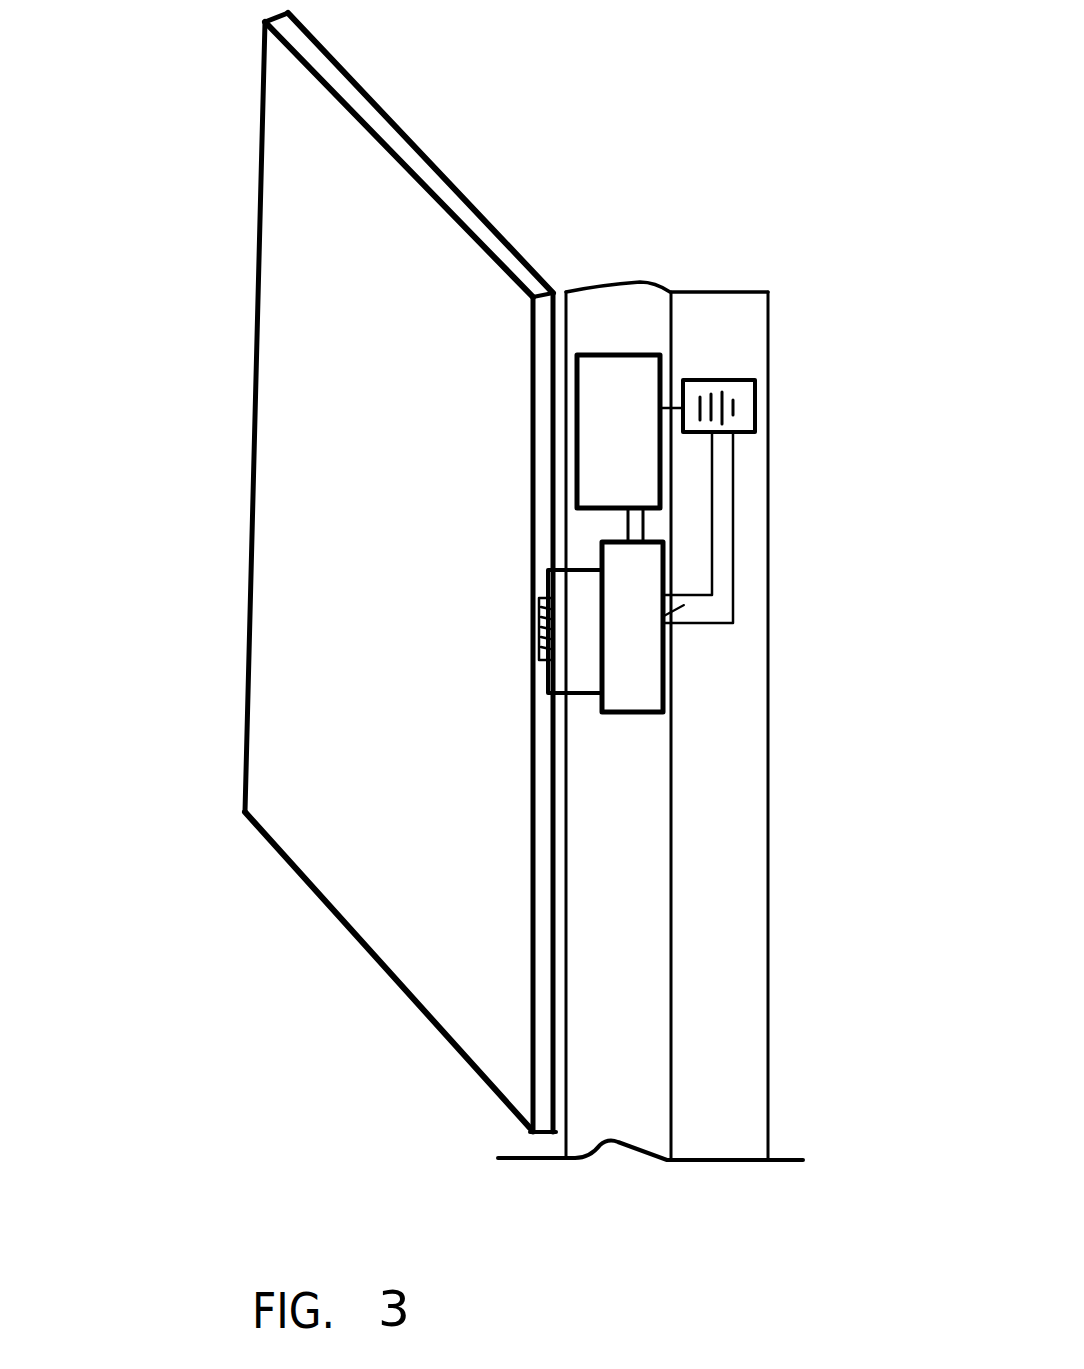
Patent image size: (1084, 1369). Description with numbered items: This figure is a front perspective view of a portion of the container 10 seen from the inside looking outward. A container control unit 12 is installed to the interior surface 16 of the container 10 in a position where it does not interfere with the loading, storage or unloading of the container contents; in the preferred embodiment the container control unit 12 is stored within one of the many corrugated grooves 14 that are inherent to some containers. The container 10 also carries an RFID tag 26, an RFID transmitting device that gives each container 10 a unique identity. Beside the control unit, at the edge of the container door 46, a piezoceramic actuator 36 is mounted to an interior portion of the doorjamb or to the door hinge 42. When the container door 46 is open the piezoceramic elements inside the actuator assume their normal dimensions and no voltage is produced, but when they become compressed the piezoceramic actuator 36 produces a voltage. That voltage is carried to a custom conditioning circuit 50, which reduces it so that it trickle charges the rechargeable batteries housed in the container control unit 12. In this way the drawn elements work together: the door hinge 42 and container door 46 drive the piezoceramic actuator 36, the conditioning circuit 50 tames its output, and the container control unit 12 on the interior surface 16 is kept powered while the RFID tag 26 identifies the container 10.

The container 10 is at (650, 1232).
The container control unit 12 is at (665, 372).
The corrugated groove 14 is at (608, 1142).
The interior surface 16 is at (657, 725).
The RFID tag 26 is at (755, 408).
The piezoceramic actuator 36 is at (539, 631).
The door hinge 42 is at (543, 715).
The container door 46 is at (437, 172).
The conditioning circuit 50 is at (672, 660).